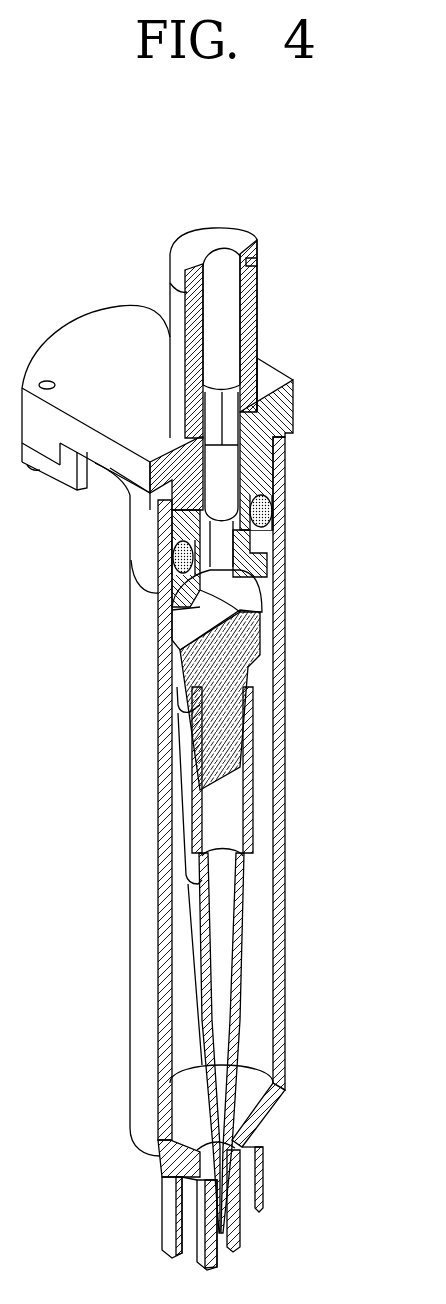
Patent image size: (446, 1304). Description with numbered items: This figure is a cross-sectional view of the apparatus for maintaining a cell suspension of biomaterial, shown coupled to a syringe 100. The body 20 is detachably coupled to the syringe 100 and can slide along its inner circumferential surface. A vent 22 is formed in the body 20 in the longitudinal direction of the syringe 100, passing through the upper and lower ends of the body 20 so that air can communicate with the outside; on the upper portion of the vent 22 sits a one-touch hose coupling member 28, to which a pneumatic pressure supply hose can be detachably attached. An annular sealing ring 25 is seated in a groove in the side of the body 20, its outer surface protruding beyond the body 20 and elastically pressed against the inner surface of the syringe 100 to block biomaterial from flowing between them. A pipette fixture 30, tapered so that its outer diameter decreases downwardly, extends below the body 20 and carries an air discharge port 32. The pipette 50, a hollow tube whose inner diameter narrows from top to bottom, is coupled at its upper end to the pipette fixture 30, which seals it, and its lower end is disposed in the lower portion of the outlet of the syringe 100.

The body 20 is at (262, 459).
The vent 22 is at (218, 480).
The sealing ring 25 is at (271, 512).
The one-touch hose coupling member 28 is at (170, 337).
The pipette fixture 30 is at (233, 671).
The air discharge port 32 is at (238, 595).
The pipette 50 is at (247, 836).
The syringe 100 is at (278, 767).